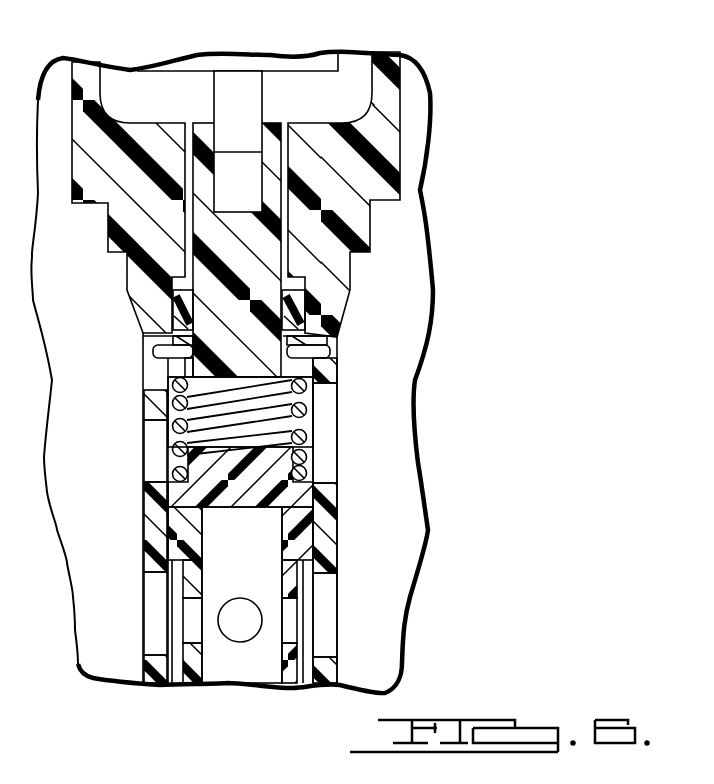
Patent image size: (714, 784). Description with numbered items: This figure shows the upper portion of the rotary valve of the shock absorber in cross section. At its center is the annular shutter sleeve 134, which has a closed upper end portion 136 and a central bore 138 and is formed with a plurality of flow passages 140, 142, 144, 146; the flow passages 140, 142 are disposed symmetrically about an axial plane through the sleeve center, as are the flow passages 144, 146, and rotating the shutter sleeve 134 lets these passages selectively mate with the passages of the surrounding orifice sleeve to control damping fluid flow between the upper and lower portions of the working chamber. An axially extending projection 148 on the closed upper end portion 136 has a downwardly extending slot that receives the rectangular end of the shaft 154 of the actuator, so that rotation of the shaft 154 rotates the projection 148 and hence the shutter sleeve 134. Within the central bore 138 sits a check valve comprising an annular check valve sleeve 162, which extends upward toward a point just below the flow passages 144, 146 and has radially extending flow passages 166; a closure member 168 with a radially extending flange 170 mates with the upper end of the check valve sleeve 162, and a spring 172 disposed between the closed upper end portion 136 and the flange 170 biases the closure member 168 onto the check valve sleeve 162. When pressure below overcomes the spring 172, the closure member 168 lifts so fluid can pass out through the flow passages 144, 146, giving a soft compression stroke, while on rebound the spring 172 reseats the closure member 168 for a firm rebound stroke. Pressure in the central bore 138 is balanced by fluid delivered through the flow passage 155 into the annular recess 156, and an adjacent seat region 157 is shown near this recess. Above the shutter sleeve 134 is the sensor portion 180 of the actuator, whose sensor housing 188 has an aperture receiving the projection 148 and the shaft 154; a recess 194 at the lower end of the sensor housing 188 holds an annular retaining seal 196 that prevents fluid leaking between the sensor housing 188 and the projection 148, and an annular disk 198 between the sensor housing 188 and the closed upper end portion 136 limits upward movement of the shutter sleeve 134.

The shutter sleeve 134 is at (158, 398).
The closed upper end portion 136 is at (337, 370).
The central bore 138 is at (297, 426).
The flow passage 140 is at (322, 618).
The flow passage 142 is at (158, 620).
The flow passage 144 is at (158, 482).
The flow passage 146 is at (322, 467).
The projection 148 is at (270, 268).
The shaft 154 is at (232, 112).
The flow passage 155 is at (187, 368).
The annular recess 156 is at (172, 340).
The spring seat plate 157 is at (233, 382).
The check valve sleeve 162 is at (300, 523).
The flow passages 166 is at (272, 640).
The closure member 168 is at (248, 495).
The flange 170 is at (318, 496).
The spring 172 is at (303, 410).
The sensor portion 180 is at (345, 107).
The sensor housing 188 is at (390, 125).
The recess 194 is at (160, 292).
The annular retaining seal 196 is at (305, 318).
The annular disk 198 is at (335, 342).